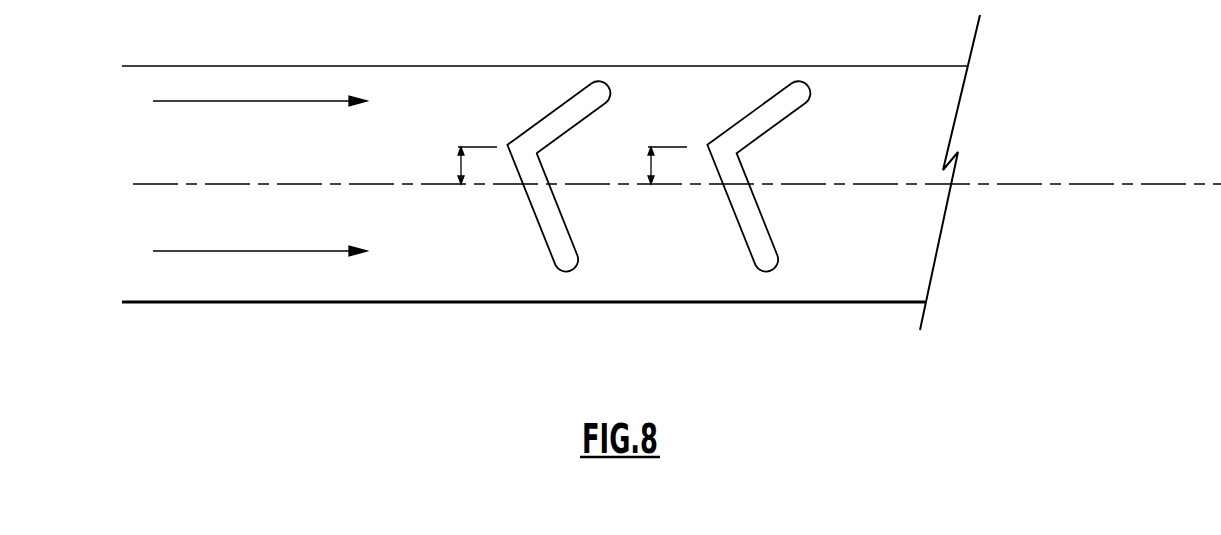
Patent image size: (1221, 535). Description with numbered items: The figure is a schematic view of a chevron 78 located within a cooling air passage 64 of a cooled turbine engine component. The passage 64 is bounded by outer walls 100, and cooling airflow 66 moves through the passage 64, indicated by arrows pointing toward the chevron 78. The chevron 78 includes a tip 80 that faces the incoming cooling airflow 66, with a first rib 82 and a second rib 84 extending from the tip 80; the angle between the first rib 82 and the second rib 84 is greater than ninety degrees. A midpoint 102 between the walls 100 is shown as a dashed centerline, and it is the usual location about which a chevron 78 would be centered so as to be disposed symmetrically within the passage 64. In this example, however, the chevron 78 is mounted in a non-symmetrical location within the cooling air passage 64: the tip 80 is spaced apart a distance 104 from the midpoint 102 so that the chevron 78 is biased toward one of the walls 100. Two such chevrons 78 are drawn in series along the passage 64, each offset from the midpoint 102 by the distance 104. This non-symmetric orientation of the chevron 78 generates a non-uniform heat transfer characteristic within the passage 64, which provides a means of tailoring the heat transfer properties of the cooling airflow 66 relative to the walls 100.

The outer walls 100 is at (722, 65).
The midpoint 102 is at (798, 185).
The cooling airflow 66 is at (195, 240).
The cooling air passage 64 is at (452, 283).
The chevron 78 is at (628, 214).
The tip 80 is at (503, 135).
The first rib 82 is at (535, 197).
The second rib 84 is at (560, 123).
The distance 104 is at (460, 168).